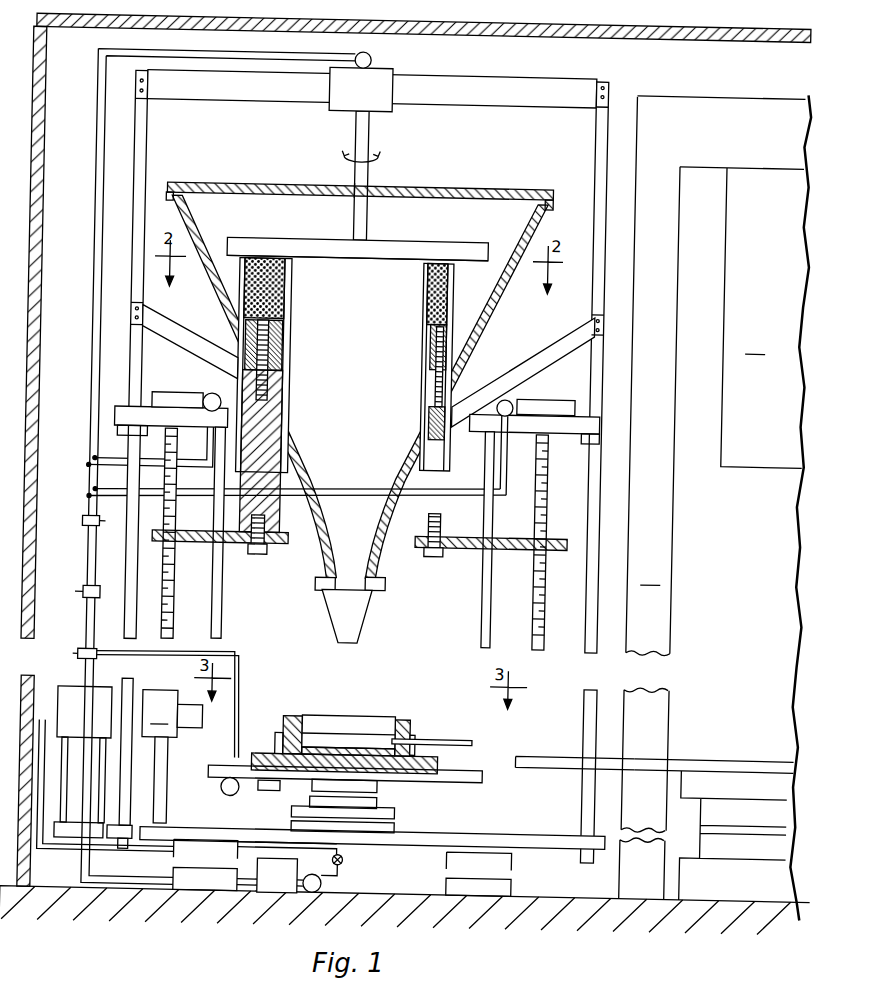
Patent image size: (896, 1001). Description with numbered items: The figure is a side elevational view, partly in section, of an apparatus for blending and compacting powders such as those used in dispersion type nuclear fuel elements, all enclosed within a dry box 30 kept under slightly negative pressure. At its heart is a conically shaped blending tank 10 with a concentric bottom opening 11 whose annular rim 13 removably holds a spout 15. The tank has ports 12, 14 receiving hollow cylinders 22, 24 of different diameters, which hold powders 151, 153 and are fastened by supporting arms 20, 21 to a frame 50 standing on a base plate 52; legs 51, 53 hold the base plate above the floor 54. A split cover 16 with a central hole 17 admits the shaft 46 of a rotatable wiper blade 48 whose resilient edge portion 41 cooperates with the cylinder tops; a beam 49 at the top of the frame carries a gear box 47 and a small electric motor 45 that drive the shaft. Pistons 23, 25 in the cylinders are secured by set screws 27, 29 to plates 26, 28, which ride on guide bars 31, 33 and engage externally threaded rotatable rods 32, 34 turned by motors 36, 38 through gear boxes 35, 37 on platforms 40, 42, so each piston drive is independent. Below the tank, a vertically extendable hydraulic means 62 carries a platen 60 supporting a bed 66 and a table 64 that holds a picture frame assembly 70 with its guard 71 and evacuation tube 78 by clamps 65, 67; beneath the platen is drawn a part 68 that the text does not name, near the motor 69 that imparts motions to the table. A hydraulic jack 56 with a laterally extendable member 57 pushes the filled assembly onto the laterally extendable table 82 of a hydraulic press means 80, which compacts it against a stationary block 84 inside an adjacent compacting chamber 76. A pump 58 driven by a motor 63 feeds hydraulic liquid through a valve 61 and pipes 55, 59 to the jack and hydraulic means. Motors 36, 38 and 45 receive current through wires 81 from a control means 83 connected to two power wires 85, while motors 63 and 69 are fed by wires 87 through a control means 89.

The dry box 30 is at (642, 36).
The small electric motor 45 is at (362, 56).
The gear box 47 is at (361, 89).
The shaft 46 is at (347, 137).
The beam 49 is at (508, 106).
The frame 50 is at (139, 148).
The split cover 16 is at (244, 188).
The central hole 17 is at (360, 188).
The rotatable wiper blade 48 is at (309, 243).
The resilient edge portion 41 is at (364, 261).
The blending tank 10 is at (209, 292).
The powder 151 is at (262, 288).
The powder 153 is at (426, 291).
The supporting arm 20 is at (182, 354).
The supporting arm 21 is at (527, 350).
The hollow cylinder 22 is at (282, 348).
The hollow cylinder 24 is at (422, 348).
The piston 23 is at (268, 407).
The piston 25 is at (430, 410).
The port 12 is at (287, 443).
The port 14 is at (420, 441).
The gear box 35 is at (177, 400).
The small electric motor 36 is at (212, 402).
The platform 40 is at (171, 421).
The wires 81 is at (93, 430).
The guide bar 31 is at (214, 490).
The gear box 37 is at (546, 407).
The small electric motor 38 is at (504, 447).
The platform 42 is at (534, 429).
The guide bar 33 is at (484, 486).
The control means 83 is at (83, 526).
The two wires 85 is at (90, 566).
The plate 26 is at (289, 545).
The set screw 27 is at (262, 558).
The plate 28 is at (429, 536).
The set screw 29 is at (434, 557).
The concentric bottom opening 11 is at (331, 582).
The annular rim 13 is at (387, 585).
The externally threaded rotatable rod 32 is at (176, 584).
The externally threaded rotatable rod 34 is at (535, 592).
The spout 15 is at (367, 624).
The stationary block 84 is at (720, 282).
The compacting chamber 76 is at (650, 498).
The control means 89 is at (111, 650).
The wires 87 is at (92, 676).
The hydraulic jack 56 is at (159, 757).
The laterally extendable member 57 is at (199, 734).
The clamp 65 is at (288, 726).
The picture frame assembly 70 is at (309, 721).
The guard 71 is at (404, 720).
The clamp 67 is at (418, 737).
The evacuation tube 78 is at (470, 732).
The table 64 is at (283, 752).
The bed 66 is at (445, 767).
The hydraulic means 62 is at (384, 787).
The platen 60 is at (476, 782).
The electric motor 69 is at (236, 800).
The guide block 68 is at (281, 796).
The laterally extendable table 82 is at (555, 755).
The hydraulic press means 80 is at (742, 756).
The base plate 52 is at (552, 833).
The pipe 55 is at (66, 862).
The leg 51 is at (181, 882).
The pump 58 is at (277, 875).
The pipe 59 is at (350, 850).
The valve 61 is at (350, 866).
The small electric motor 63 is at (329, 886).
The leg 53 is at (454, 882).
The floor 54 is at (573, 895).